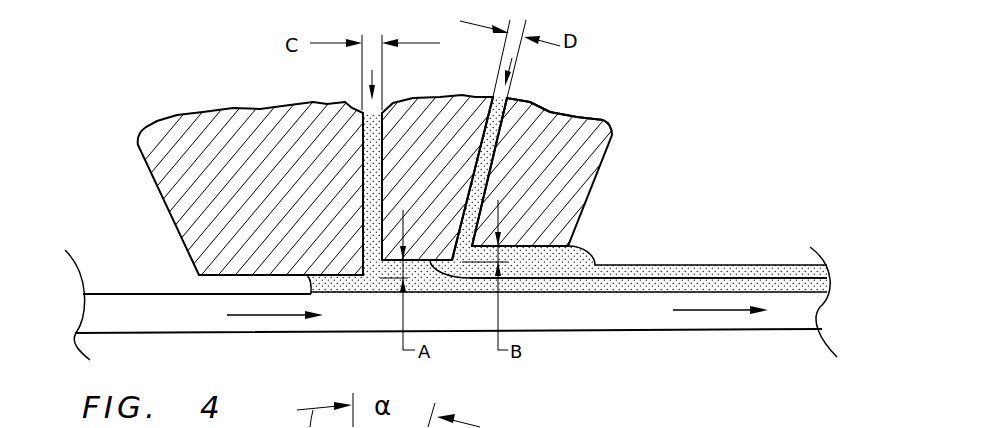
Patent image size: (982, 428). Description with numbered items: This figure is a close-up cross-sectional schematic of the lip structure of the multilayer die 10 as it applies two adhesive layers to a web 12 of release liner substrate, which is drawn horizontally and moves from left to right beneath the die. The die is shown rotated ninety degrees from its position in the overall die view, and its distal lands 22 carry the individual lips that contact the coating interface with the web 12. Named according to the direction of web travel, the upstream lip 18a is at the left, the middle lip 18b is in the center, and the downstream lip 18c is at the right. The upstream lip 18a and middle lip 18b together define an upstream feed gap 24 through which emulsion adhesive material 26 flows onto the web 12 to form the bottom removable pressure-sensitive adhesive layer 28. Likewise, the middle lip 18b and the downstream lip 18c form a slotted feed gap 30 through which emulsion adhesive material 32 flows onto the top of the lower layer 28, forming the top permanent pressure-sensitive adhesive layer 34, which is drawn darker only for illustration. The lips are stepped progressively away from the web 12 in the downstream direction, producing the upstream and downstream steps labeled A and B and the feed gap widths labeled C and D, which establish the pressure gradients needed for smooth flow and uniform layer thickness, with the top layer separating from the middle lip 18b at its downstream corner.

The multilayer die 10 is at (140, 183).
The release liner substrate web 12 is at (167, 295).
The upstream lip 18a is at (208, 277).
The middle lip 18b is at (432, 262).
The downstream lip 18c is at (537, 252).
The distal lands 22 is at (649, 117).
The upstream feed gap 24 is at (372, 183).
The emulsion adhesive material 26 is at (365, 153).
The bottom removable pressure-sensitive adhesive layer 28 is at (738, 278).
The slotted feed gap 30 is at (507, 95).
The emulsion adhesive material 32 is at (550, 112).
The top permanent pressure-sensitive adhesive layer 34 is at (687, 265).